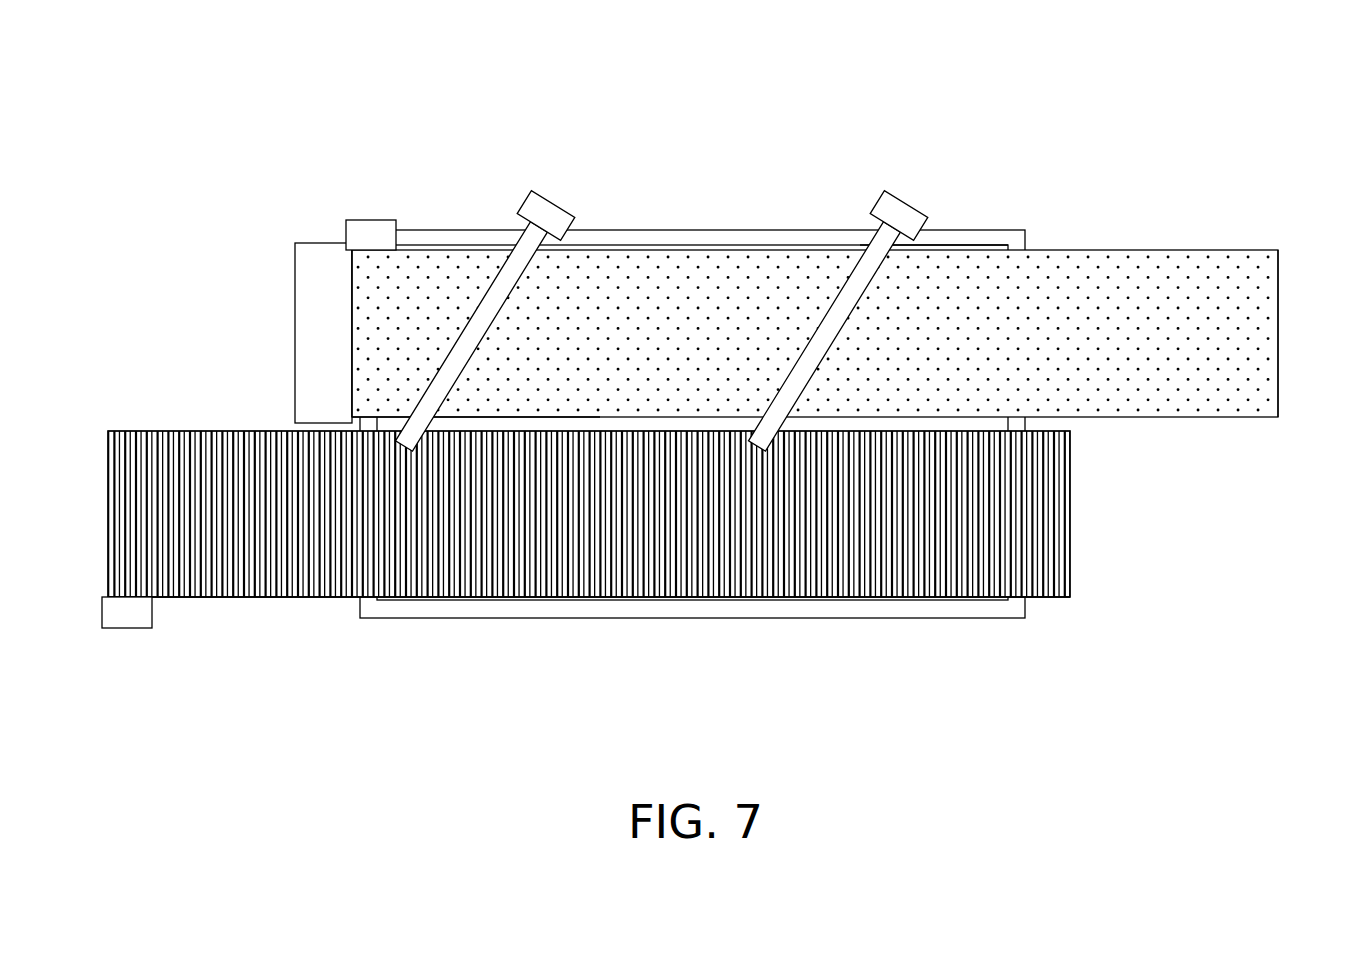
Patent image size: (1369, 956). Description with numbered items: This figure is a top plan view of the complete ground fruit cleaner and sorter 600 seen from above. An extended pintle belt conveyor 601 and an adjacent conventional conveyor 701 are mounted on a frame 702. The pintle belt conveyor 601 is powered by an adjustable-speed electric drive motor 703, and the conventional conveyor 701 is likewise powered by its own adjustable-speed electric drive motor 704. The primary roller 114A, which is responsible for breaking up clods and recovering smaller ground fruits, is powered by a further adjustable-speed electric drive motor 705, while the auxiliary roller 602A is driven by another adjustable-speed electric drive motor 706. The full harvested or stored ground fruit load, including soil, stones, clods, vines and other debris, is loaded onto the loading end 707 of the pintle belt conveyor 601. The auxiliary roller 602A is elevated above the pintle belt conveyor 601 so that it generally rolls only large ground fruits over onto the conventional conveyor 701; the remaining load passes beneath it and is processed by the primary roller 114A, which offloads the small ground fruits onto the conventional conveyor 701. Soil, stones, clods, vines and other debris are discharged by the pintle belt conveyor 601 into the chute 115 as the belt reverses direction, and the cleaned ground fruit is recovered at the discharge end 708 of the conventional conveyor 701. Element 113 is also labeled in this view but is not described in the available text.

The ground fruit cleaner and sorter 600 is at (232, 78).
The extended pintle belt conveyor 601 is at (1063, 278).
The auxiliary roller 602A is at (877, 250).
The thermal interface layer 113 is at (360, 318).
The primary roller 114A is at (440, 388).
The chute 115 is at (285, 378).
The conventional conveyor 701 is at (300, 570).
The frame 702 is at (713, 610).
The adjustable-speed electric drive motor 703 is at (372, 233).
The adjustable-speed electric drive motor 704 is at (125, 612).
The adjustable-speed electric drive motor 705 is at (543, 218).
The adjustable-speed electric drive motor 706 is at (897, 218).
The loading end 707 is at (1258, 340).
The discharge end 708 is at (130, 518).